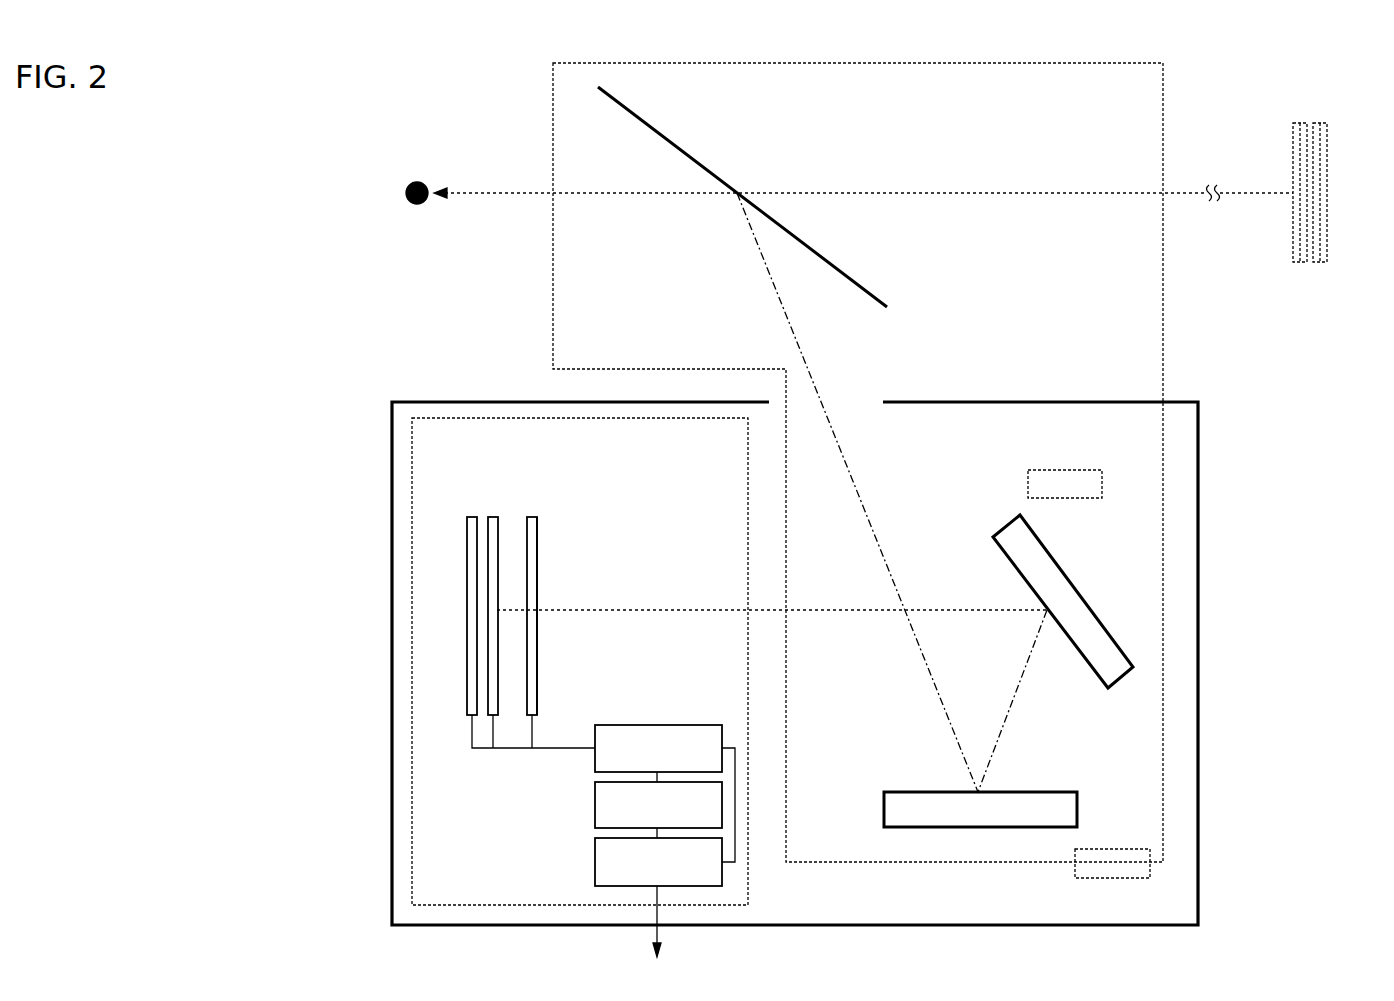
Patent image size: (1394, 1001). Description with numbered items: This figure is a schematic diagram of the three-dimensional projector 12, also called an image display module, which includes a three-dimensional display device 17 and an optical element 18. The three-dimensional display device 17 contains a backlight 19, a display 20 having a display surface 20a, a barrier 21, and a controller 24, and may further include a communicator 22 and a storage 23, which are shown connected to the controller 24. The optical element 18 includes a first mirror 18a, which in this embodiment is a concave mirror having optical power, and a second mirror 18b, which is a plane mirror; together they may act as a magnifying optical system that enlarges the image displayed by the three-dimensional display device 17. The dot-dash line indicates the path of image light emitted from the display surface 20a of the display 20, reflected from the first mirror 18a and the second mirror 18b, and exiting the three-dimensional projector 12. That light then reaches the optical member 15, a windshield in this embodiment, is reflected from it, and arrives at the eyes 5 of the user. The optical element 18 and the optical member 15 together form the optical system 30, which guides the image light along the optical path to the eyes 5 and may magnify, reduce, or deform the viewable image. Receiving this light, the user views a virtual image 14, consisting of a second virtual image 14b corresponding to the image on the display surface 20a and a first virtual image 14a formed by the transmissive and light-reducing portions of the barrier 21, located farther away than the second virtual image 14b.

The eyes 5 is at (404, 193).
The 3D projector 12 is at (392, 432).
The virtual image 14 is at (1314, 257).
The first virtual image 14a is at (1347, 233).
The second virtual image 14b is at (1299, 265).
The optical member 15 is at (637, 113).
The 3D display device 17 is at (412, 490).
The optical element 18 is at (1021, 674).
The first mirror 18a is at (1040, 537).
The second mirror 18b is at (1072, 768).
The backlight 19 is at (472, 517).
The display 20 is at (532, 517).
The display surface 20a is at (537, 550).
The barrier 21 is at (493, 517).
The communicator 22 is at (595, 862).
The storage 23 is at (595, 805).
The controller 24 is at (626, 725).
The optical system 30 is at (1163, 93).